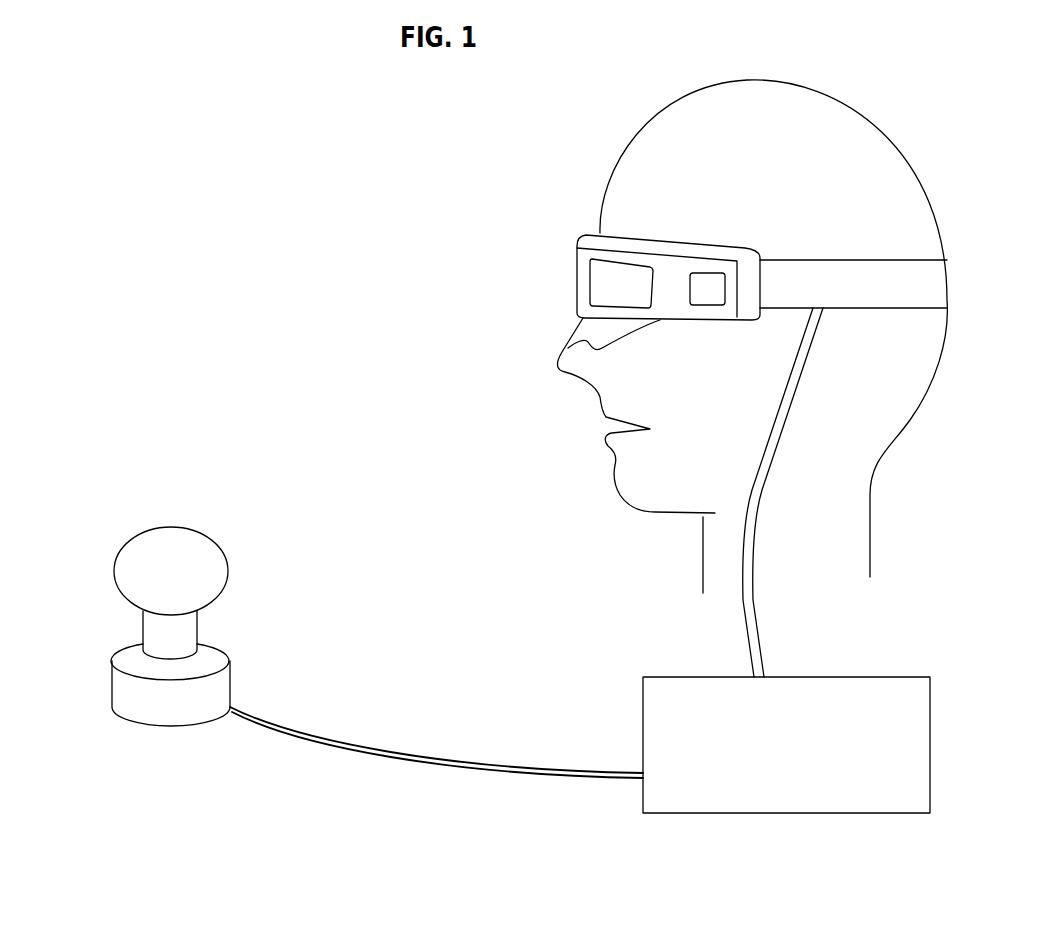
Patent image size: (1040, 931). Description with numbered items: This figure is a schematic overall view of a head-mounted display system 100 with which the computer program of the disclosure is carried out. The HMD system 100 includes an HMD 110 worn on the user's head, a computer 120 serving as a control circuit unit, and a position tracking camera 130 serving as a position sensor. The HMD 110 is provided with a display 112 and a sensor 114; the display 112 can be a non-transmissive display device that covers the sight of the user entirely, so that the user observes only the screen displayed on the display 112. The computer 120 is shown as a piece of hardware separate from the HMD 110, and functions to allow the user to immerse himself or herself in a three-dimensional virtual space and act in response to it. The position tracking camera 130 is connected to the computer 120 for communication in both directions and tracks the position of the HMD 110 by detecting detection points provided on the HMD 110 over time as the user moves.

The HMD system 100 is at (165, 200).
The HMD 110 is at (577, 248).
The display 112 is at (603, 300).
The sensor 114 is at (707, 295).
The computer 120 is at (917, 737).
The position tracking camera 130 is at (202, 558).